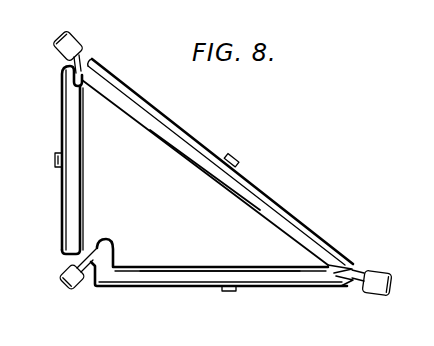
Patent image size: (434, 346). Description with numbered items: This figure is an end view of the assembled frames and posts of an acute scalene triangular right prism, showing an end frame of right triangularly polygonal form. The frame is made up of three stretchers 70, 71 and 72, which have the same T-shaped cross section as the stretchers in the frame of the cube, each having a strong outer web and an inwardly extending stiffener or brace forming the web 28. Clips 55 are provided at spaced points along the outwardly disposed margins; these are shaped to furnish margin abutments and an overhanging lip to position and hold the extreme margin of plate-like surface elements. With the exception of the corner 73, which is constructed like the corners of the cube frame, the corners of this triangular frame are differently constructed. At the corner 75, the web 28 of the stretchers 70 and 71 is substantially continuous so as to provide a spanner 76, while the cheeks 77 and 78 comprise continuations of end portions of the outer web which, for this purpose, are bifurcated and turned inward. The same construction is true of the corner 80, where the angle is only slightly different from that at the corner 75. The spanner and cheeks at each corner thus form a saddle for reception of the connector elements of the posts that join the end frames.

The web 28 is at (254, 197).
The clips 55 is at (57, 157).
The stretcher 70 is at (178, 137).
The stretcher 71 is at (186, 275).
The stretcher 72 is at (72, 194).
The corner 73 is at (85, 245).
The corner 75 is at (363, 263).
The spanner 76 is at (345, 264).
The cheek 77 is at (344, 261).
The cheek 78 is at (337, 283).
The corner 80 is at (96, 52).